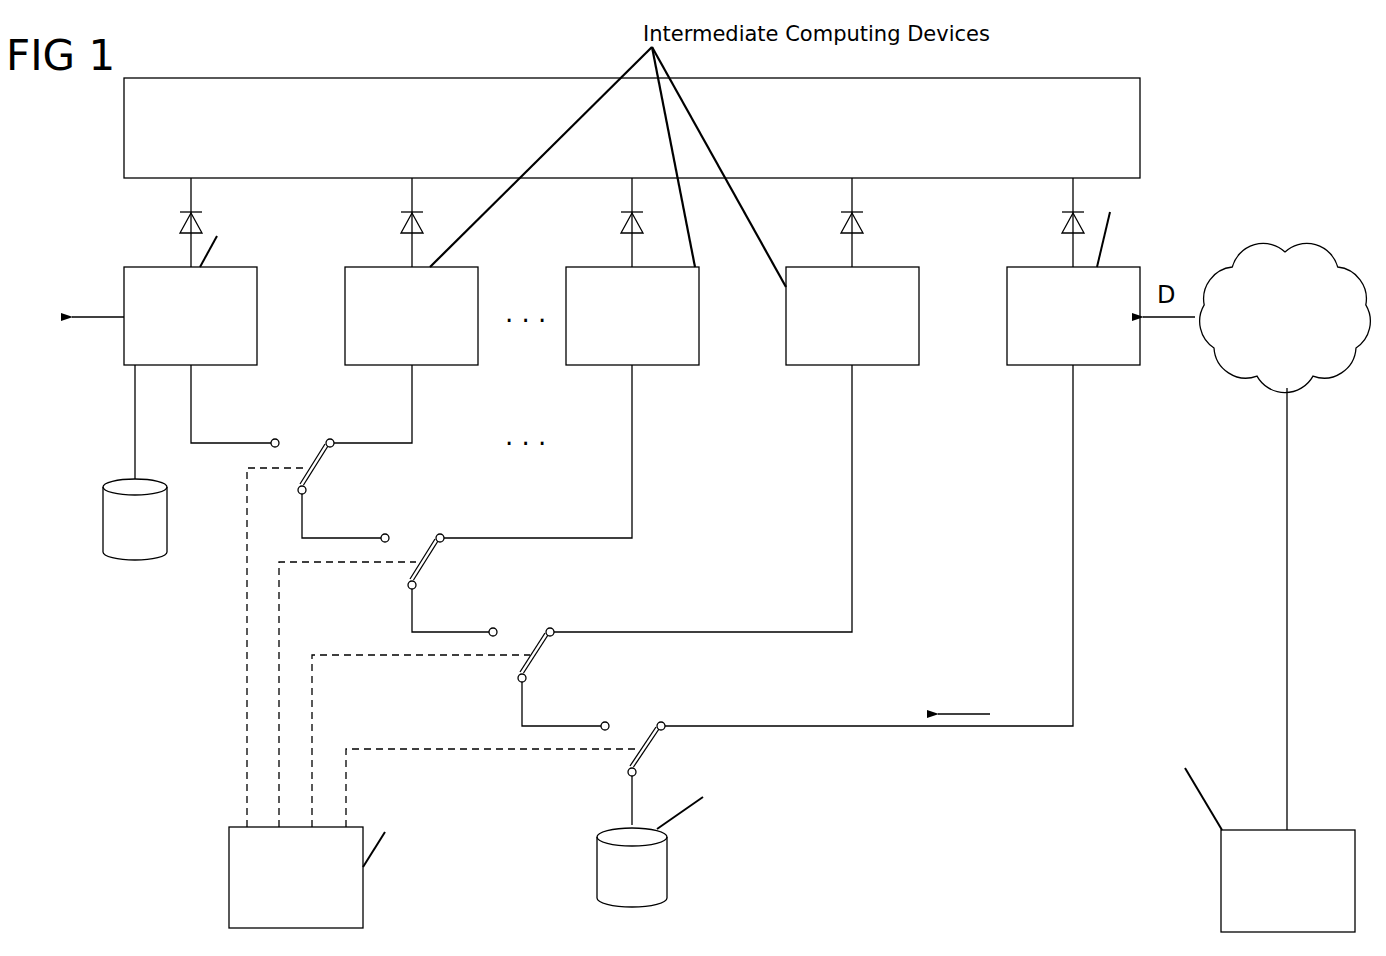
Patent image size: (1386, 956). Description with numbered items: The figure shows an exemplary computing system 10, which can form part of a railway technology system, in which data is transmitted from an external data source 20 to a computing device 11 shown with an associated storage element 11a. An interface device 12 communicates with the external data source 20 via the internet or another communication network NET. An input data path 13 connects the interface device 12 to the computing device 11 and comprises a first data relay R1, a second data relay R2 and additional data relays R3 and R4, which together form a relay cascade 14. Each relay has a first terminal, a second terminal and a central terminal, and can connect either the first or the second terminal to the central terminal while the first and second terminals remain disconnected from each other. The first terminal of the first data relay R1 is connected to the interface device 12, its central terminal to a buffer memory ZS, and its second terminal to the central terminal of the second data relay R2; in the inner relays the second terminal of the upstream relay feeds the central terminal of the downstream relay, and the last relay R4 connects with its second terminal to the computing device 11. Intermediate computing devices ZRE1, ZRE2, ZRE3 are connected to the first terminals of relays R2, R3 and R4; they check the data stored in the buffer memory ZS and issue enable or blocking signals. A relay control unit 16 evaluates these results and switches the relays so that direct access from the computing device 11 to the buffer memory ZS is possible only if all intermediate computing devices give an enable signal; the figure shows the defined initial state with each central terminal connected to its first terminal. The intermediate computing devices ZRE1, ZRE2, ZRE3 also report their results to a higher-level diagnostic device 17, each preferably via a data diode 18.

The computing system 10 is at (152, 758).
The computing device 11 is at (208, 332).
The data storage 11a is at (156, 537).
The interface device 12 is at (1090, 332).
The input data path 13 is at (944, 728).
The relay cascade 14 is at (698, 563).
The relay control unit 16 is at (313, 890).
The diagnostic device 17 is at (649, 143).
The data diode 18 is at (179, 221).
The external data source 20 is at (1304, 892).
The intermediate computing device ZRE1 is at (888, 332).
The intermediate computing device ZRE2 is at (668, 332).
The intermediate computing device ZRE3 is at (447, 332).
The communication network NET is at (1313, 332).
The buffer memory ZS is at (650, 887).
The first data relay R1 is at (630, 710).
The second data relay R2 is at (520, 617).
The additional data relay R3 is at (410, 524).
The additional data relay R4 is at (300, 429).